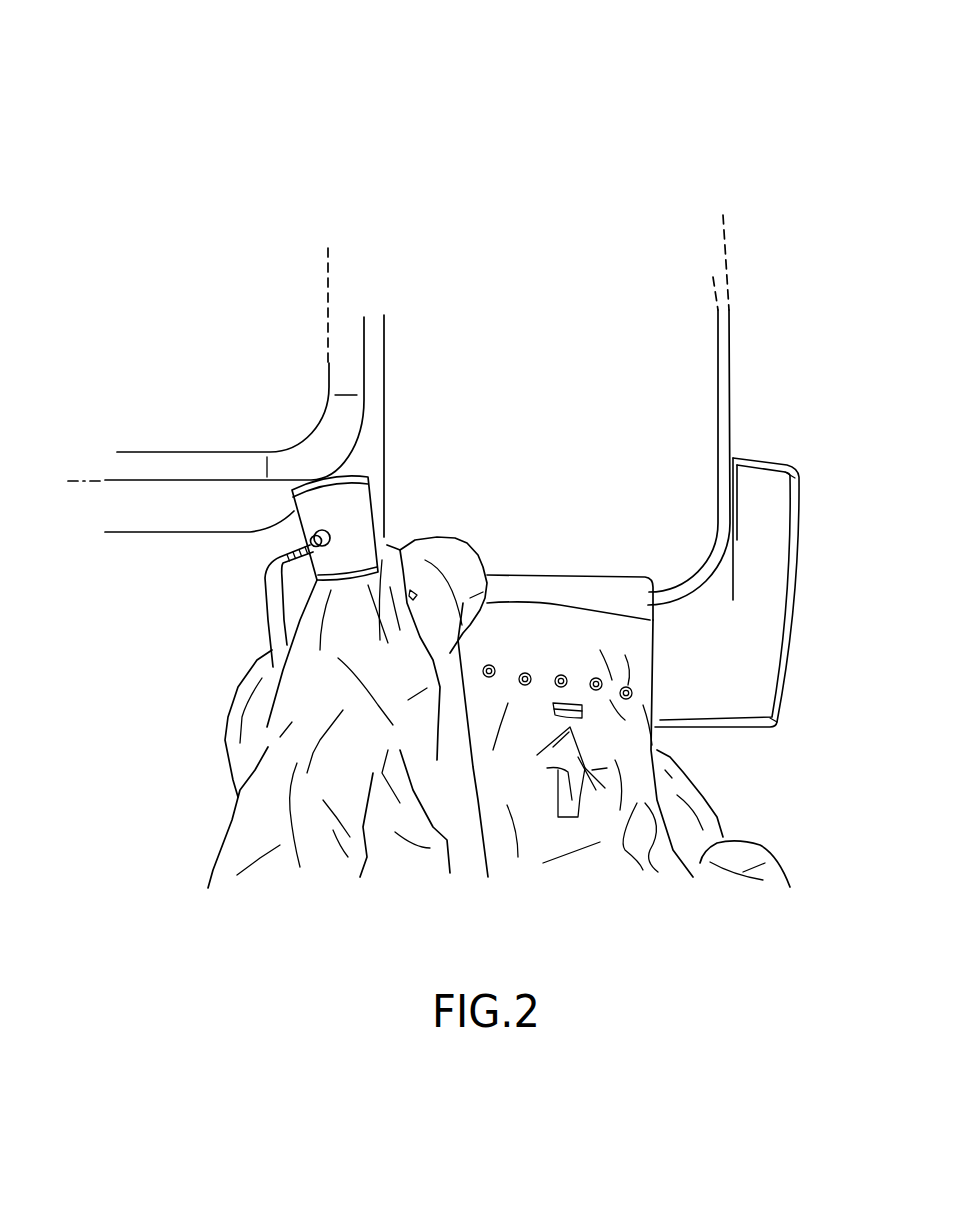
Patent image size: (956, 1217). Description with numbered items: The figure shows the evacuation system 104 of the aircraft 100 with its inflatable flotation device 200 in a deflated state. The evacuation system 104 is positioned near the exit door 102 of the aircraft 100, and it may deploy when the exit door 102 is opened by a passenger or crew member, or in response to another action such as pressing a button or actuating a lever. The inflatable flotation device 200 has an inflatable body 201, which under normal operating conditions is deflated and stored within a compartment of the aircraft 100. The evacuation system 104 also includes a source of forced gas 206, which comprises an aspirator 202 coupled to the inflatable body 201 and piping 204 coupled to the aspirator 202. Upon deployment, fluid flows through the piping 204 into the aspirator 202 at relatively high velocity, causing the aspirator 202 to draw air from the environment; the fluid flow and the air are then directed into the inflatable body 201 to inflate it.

The aircraft 100 is at (401, 48).
The exit door 102 is at (707, 343).
The evacuation system 104 is at (113, 671).
The inflatable flotation device 200 is at (347, 870).
The inflatable body 201 is at (510, 855).
The aspirator 202 is at (365, 522).
The piping 204 is at (272, 587).
The source of forced gas 206 is at (299, 459).